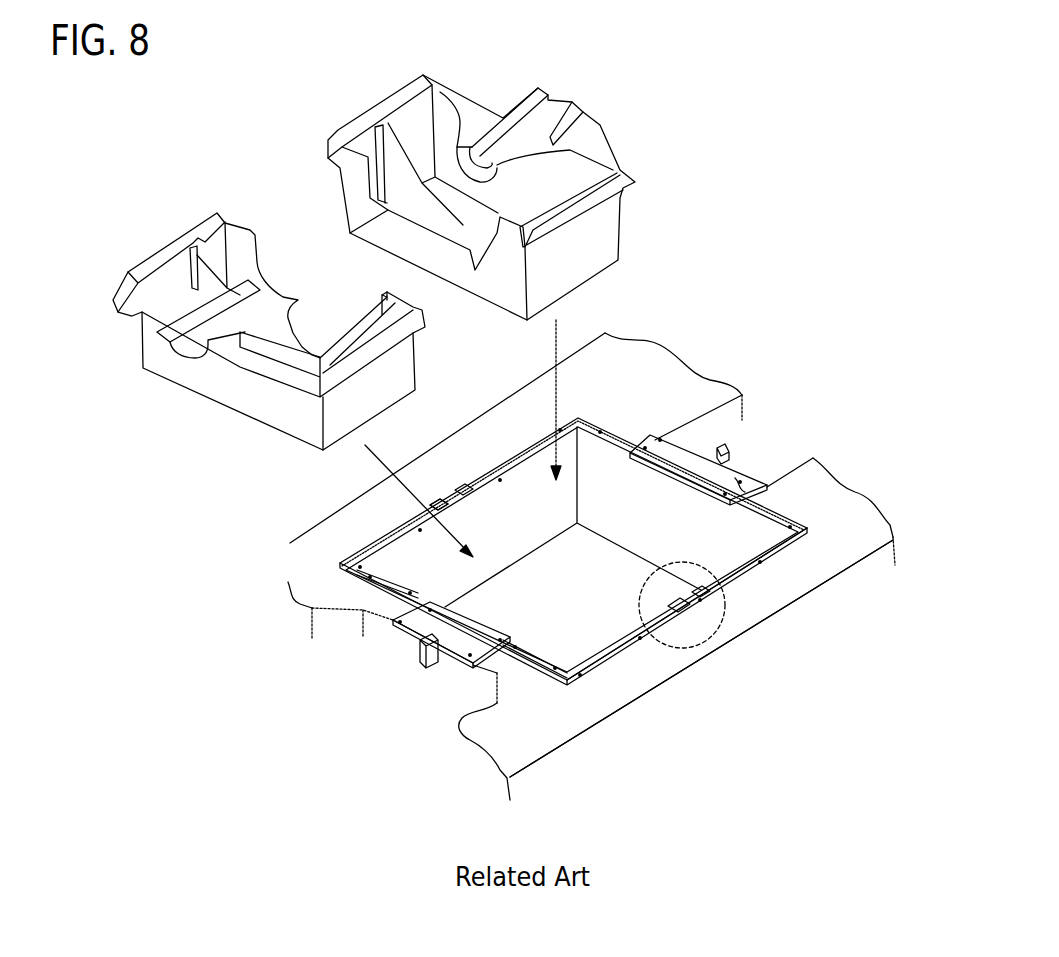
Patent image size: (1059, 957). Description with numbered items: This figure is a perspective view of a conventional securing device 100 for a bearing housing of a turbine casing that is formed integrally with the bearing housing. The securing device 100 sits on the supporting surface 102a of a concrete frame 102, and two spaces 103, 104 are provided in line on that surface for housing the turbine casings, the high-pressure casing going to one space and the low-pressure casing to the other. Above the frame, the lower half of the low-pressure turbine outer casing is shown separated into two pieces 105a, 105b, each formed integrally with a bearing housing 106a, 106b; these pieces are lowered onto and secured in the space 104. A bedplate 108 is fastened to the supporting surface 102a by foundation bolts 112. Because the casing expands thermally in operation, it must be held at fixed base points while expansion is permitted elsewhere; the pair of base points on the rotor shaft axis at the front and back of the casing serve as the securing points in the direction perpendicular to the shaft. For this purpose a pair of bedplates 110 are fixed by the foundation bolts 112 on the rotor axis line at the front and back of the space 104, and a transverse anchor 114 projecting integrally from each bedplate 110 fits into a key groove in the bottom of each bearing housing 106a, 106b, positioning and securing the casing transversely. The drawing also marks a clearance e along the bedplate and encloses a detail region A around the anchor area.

The securing device 100 is at (340, 712).
The concrete frame 102 is at (793, 607).
The supporting surface 102a is at (743, 622).
The space 103 is at (410, 683).
The space 104 is at (607, 650).
The low-pressure turbine outer casing 105a is at (269, 324).
The low-pressure turbine outer casing 105b is at (481, 177).
The bearing housing 106a is at (165, 262).
The bearing housing 106b is at (437, 83).
The bedplate 108 is at (787, 550).
The bedplate 110 is at (693, 447).
The foundation bolt 112 is at (580, 683).
The transverse anchor 114 is at (727, 452).
The gap e is at (457, 488).
The detail region A is at (688, 647).